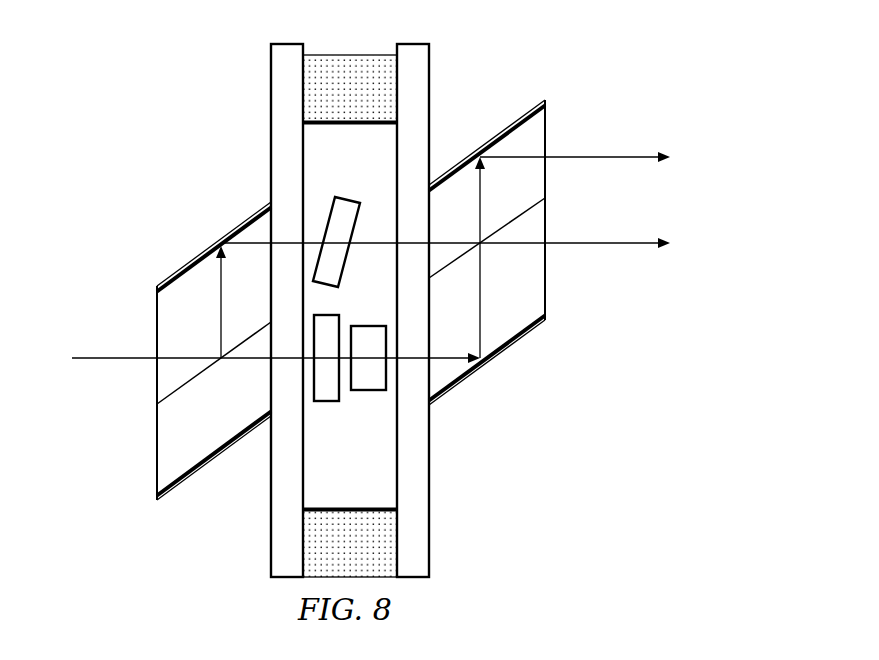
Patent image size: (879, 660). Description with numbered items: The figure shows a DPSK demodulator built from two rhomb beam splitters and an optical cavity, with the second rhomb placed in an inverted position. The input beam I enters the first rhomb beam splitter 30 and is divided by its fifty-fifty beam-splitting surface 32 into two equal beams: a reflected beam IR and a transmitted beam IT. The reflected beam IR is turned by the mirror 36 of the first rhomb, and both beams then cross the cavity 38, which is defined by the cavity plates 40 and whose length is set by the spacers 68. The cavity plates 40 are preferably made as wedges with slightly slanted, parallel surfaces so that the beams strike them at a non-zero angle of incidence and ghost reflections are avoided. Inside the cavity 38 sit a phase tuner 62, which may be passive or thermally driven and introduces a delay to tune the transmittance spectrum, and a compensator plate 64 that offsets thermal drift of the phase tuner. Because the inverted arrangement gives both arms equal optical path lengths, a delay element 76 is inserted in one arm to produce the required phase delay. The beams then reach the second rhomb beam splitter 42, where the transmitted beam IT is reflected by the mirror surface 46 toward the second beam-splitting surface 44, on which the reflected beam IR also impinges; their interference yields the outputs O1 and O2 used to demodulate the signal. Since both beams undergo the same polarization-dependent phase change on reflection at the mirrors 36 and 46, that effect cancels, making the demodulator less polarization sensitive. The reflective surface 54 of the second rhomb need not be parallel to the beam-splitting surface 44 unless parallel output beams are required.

The first rhomb beam splitter 30 is at (203, 240).
The beam-splitting surface 32 is at (205, 374).
The mirror 36 is at (202, 268).
The cavity 38 is at (363, 492).
The cavity plates 40 is at (271, 100).
The second rhomb beam splitter 42 is at (506, 360).
The second beam-splitting surface 44 is at (500, 224).
The mirror surface 46 is at (503, 340).
The reflective surface 54 is at (533, 133).
The phase tuner 62 is at (353, 197).
The compensator plate 64 is at (325, 402).
The spacers 68 is at (363, 102).
The delay element 76 is at (370, 391).
The input beam I is at (107, 356).
The reflected beam IR is at (222, 296).
The transmitted beam IT is at (250, 359).
The first output O1 is at (627, 242).
The second output O2 is at (627, 156).